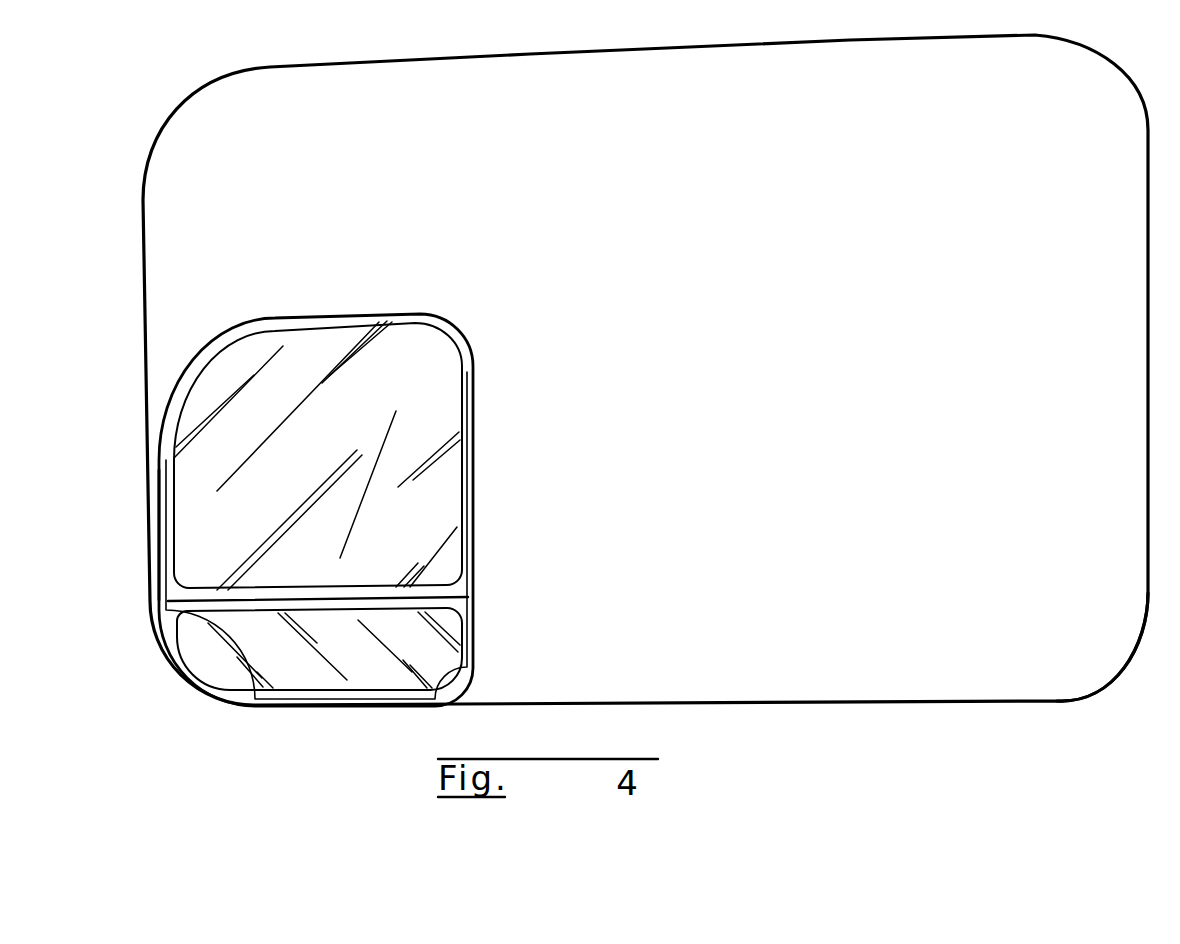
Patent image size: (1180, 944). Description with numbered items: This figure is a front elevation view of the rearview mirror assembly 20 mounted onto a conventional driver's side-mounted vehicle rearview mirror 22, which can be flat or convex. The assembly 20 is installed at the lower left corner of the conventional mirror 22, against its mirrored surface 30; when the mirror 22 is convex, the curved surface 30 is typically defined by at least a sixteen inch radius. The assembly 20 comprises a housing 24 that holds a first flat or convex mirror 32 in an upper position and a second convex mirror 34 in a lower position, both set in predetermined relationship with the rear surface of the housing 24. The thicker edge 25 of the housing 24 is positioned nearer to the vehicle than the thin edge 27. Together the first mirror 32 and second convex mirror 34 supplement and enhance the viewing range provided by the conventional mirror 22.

The rearview mirror assembly 20 is at (470, 372).
The vehicle rearview mirror 22 is at (995, 642).
The housing 24 is at (473, 577).
The thicker edge 25 is at (472, 450).
The thin edge 27 is at (162, 533).
The mirrored surface 30 is at (1103, 612).
The first mirror 32 is at (430, 512).
The second convex mirror 34 is at (318, 662).